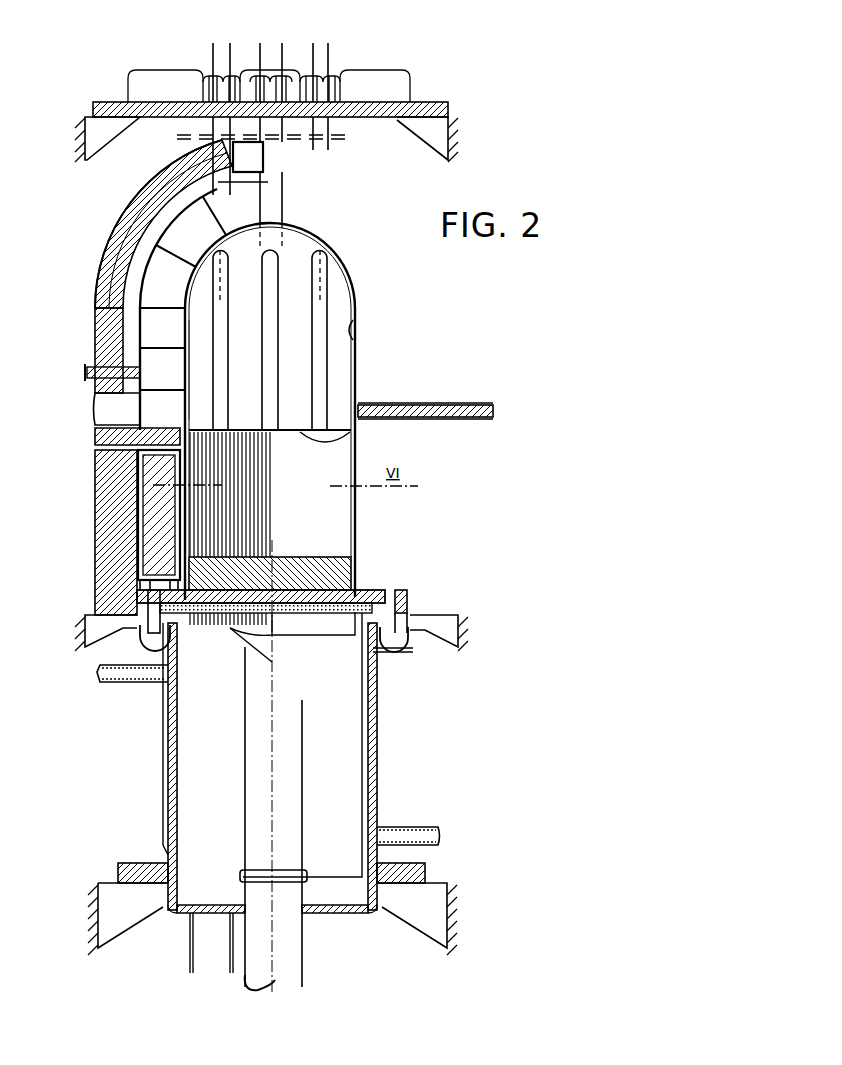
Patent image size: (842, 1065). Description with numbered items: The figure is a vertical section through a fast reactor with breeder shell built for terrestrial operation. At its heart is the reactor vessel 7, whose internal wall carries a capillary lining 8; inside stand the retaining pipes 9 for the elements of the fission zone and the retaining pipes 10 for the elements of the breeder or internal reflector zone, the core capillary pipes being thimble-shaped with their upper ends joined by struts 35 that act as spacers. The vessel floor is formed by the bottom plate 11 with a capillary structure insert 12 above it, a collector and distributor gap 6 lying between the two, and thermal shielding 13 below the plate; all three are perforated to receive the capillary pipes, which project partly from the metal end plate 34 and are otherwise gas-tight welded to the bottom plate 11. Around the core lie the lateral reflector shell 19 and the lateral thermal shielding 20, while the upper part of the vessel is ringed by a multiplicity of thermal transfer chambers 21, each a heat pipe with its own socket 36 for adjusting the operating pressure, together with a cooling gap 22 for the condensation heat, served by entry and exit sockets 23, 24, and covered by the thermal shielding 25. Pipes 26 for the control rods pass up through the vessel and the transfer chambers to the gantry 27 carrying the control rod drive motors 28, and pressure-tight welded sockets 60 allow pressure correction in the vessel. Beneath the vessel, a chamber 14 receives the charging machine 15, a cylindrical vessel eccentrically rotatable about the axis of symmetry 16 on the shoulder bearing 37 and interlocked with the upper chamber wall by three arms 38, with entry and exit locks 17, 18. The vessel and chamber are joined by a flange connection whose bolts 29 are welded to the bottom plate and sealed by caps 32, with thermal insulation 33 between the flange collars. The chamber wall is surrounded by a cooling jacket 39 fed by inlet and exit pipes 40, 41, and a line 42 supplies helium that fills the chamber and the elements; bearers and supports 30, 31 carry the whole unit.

The collector and distributor gap 6 is at (358, 595).
The reactor vessel 7 is at (356, 290).
The capillary lining 8 is at (358, 325).
The retaining pipes for the elements of the fission zone 9 is at (272, 460).
The retaining pipes for elements of the breeder or internal reflector zone 10 is at (202, 370).
The bottom plate 11 is at (408, 597).
The capillary structure insert 12 is at (352, 570).
The thermal shielding 13 is at (337, 618).
The chamber 14 is at (375, 718).
The charging machine 15 is at (365, 766).
The axis of symmetry 16 is at (275, 998).
The entry lock 17 is at (252, 990).
The exit lock 18 is at (200, 968).
The lateral reflector shell 19 is at (150, 478).
The lateral thermal shielding 20 is at (108, 528).
The thermal transfer chambers 21 is at (150, 290).
The cooling gap 22 is at (112, 275).
The entry socket 23 is at (212, 160).
The exit socket 24 is at (100, 410).
The thermal shielding of the upper part of the reactor vessel 25 is at (122, 218).
The pipes for receiving the control rods 26 is at (232, 318).
The gantry 27 is at (93, 108).
The control rod drive motors 28 is at (130, 80).
The bolts 29 is at (150, 600).
The bearers 30 is at (452, 890).
The supports 31 is at (455, 662).
The caps 32 is at (140, 640).
The thermal insulation 33 is at (410, 613).
The metal end plate 34 is at (188, 620).
The struts 35 is at (352, 442).
The socket 36 is at (87, 372).
The shoulder bearing 37 is at (292, 885).
The arms 38 is at (240, 648).
The cooling jacket 39 is at (163, 797).
The inlet pipe 40 is at (440, 835).
The exit pipe 41 is at (135, 682).
The line 42 is at (400, 660).
The pressure-tight welded sockets 60 is at (465, 408).